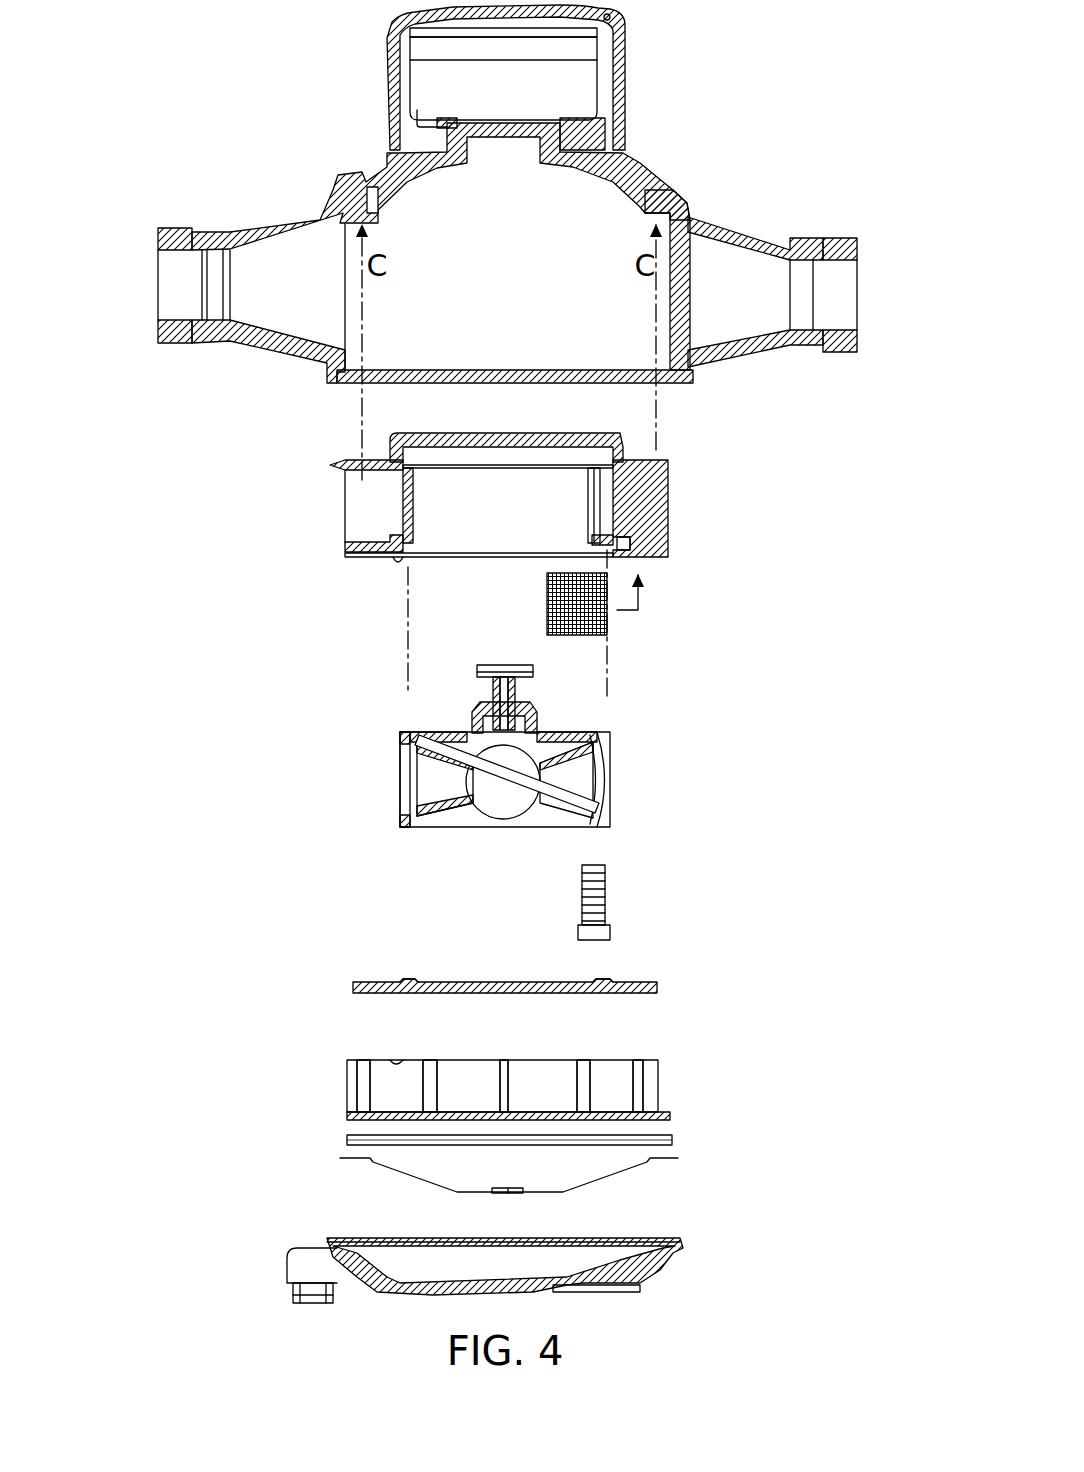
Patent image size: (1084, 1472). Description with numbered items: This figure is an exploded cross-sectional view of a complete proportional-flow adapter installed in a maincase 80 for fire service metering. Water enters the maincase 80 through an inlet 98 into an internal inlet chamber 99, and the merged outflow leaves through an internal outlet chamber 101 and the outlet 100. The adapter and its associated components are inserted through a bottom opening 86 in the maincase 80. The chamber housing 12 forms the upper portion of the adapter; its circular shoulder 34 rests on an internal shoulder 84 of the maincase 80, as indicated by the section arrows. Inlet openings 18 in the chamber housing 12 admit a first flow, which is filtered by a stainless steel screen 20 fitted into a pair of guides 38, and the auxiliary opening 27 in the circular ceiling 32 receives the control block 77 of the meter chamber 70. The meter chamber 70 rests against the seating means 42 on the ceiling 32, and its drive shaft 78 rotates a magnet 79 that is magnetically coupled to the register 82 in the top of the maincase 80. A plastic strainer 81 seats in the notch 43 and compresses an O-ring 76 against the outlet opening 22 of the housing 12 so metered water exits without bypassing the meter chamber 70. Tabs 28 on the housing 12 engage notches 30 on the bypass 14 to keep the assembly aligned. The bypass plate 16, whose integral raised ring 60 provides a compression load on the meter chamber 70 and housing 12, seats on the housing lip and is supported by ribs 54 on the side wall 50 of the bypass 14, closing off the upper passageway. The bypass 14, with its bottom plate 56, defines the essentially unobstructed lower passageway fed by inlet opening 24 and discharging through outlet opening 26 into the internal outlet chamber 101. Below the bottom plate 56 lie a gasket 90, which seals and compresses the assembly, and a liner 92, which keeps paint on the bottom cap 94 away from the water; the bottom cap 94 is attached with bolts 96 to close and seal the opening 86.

The chamber housing 12 is at (700, 512).
The bypass 14 is at (678, 1113).
The bypass plate 16 is at (655, 980).
The inlet openings 18 is at (655, 531).
The screen 20 is at (608, 618).
The outlet opening 22 is at (410, 542).
The inlet opening 24 is at (660, 1083).
The outlet opening 26 is at (347, 1092).
The auxiliary opening 27 is at (500, 440).
The tabs 28 is at (393, 572).
The notches 30 is at (390, 1050).
The circular ceiling 32 is at (560, 433).
The shoulder 34 is at (635, 458).
The guides 38 is at (598, 512).
The seating means 42 is at (437, 478).
The notch 43 is at (635, 558).
The side wall 50 is at (640, 1060).
The ribs 54 is at (578, 1062).
The bottom plate 56 is at (352, 1120).
The raised ring 60 is at (600, 978).
The meter chamber 70 is at (612, 752).
The O-ring 76 is at (400, 815).
The control block 77 is at (535, 715).
The drive shaft 78 is at (490, 690).
The magnet 79 is at (483, 665).
The maincase 80 is at (268, 222).
The plastic strainer 81 is at (608, 900).
The register 82 is at (578, 88).
The internal shoulder 84 is at (378, 208).
The bottom opening 86 is at (400, 340).
The gasket 90 is at (672, 1138).
The liner 92 is at (660, 1160).
The bottom cap 94 is at (595, 1295).
The bolts 96 is at (310, 1303).
The inlet 98 is at (858, 297).
The internal inlet chamber 99 is at (740, 273).
The outlet 100 is at (157, 274).
The internal outlet chamber 101 is at (258, 318).